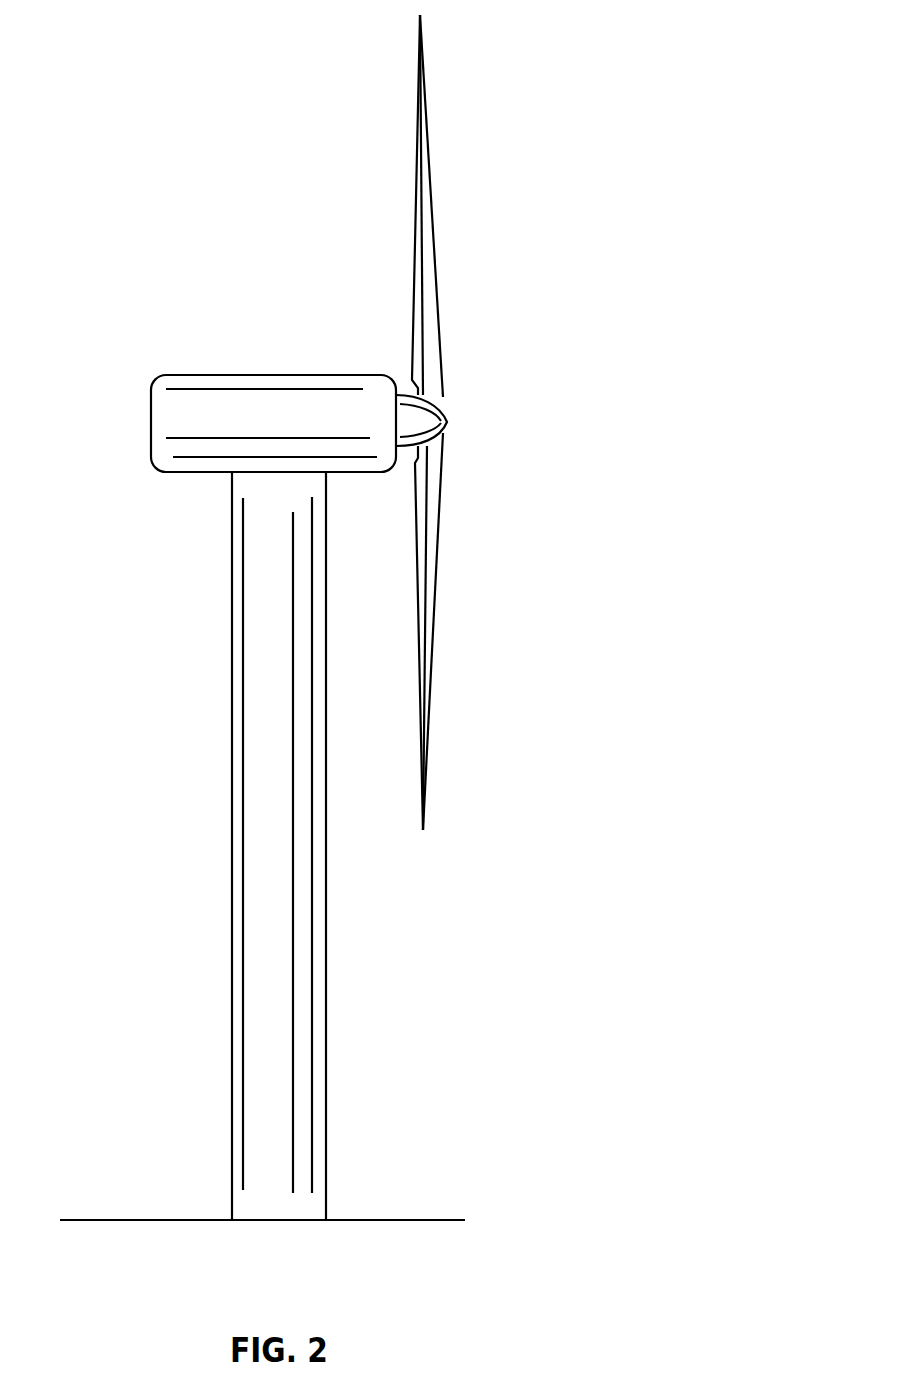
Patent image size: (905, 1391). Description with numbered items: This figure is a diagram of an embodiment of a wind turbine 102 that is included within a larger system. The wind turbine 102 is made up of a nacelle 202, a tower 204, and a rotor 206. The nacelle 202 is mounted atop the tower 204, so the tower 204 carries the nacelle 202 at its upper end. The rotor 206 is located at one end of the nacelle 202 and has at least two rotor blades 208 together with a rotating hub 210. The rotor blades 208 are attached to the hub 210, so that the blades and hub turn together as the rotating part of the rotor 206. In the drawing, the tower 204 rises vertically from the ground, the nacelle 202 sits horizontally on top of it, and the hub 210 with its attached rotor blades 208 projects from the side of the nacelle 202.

The wind turbine 102 is at (158, 188).
The nacelle 202 is at (297, 375).
The tower 204 is at (232, 842).
The rotor 206 is at (523, 422).
The rotor blades 208 is at (435, 270).
The rotating hub 210 is at (448, 423).